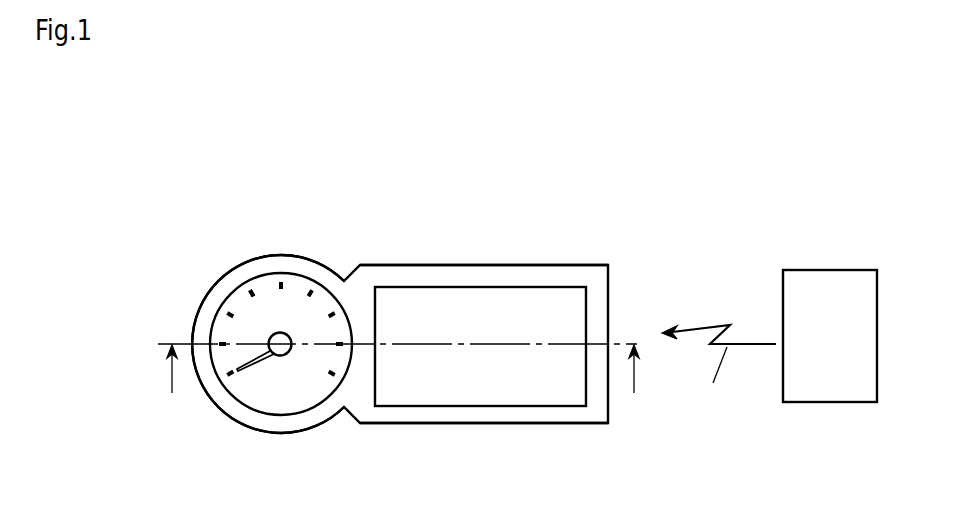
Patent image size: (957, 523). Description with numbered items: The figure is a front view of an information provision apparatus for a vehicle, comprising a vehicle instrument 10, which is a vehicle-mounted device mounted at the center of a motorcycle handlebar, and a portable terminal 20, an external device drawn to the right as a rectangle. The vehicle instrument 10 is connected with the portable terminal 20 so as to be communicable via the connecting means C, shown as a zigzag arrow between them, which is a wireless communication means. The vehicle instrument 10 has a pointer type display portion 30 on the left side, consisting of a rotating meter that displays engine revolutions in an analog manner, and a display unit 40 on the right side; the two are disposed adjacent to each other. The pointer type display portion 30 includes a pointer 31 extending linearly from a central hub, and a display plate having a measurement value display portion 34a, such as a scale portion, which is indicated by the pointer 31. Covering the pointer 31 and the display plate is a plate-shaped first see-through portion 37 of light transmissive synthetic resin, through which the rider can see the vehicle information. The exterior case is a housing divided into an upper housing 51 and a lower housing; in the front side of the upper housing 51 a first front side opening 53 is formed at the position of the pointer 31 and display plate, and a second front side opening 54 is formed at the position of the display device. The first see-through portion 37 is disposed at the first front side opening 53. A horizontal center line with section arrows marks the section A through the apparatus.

The vehicle instrument 10 is at (505, 219).
The portable terminal 20 is at (817, 298).
The pointer type display portion 30 is at (273, 417).
The pointer 31 is at (245, 372).
The measurement value display portion 34a is at (248, 289).
The first see-through portion 37 is at (296, 398).
The display unit 40 is at (583, 285).
The upper housing 51 is at (423, 264).
The first front side opening 53 is at (295, 288).
The second front side opening 54 is at (523, 413).
The section line A- A is at (402, 383).
The connecting means C is at (719, 369).